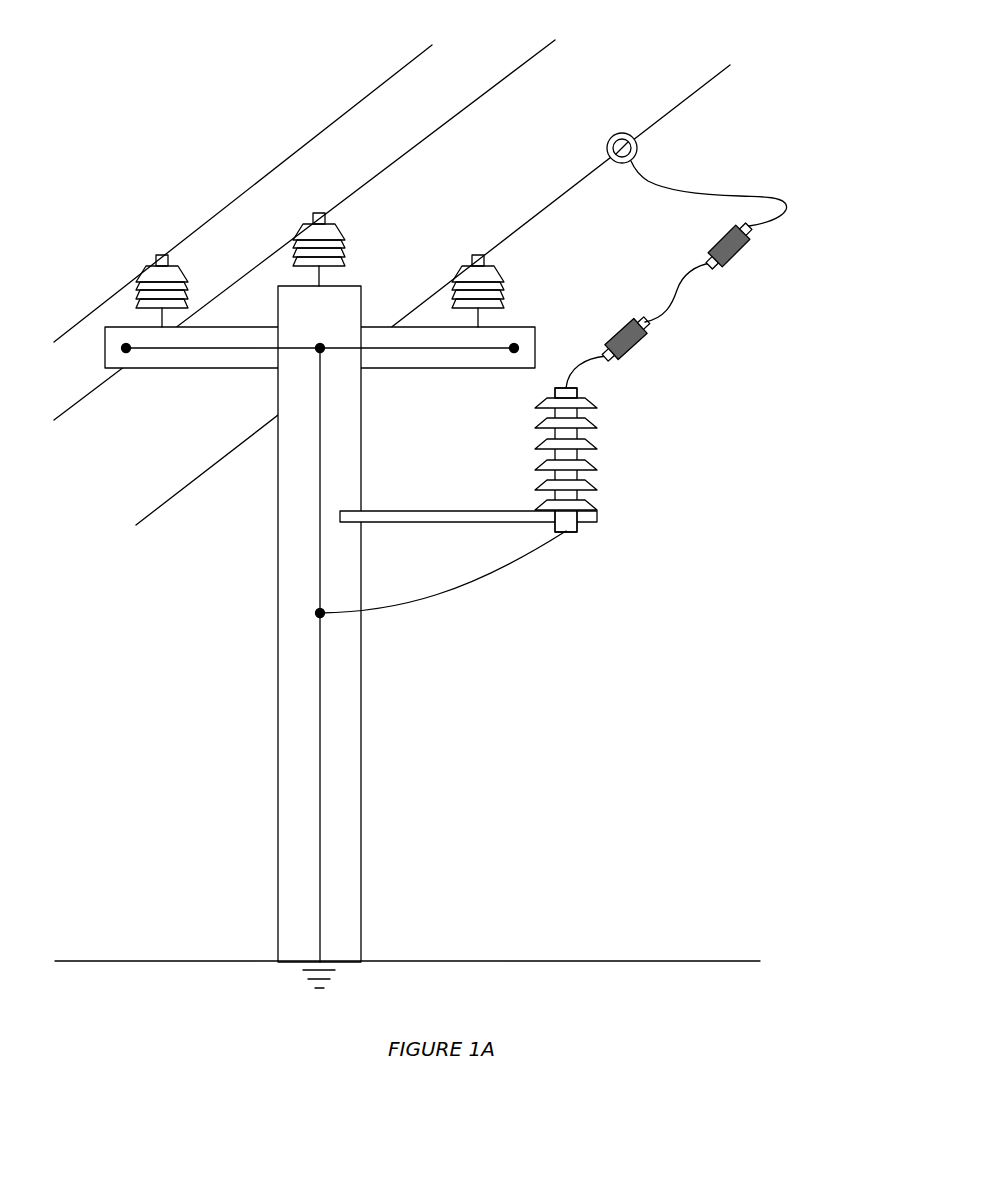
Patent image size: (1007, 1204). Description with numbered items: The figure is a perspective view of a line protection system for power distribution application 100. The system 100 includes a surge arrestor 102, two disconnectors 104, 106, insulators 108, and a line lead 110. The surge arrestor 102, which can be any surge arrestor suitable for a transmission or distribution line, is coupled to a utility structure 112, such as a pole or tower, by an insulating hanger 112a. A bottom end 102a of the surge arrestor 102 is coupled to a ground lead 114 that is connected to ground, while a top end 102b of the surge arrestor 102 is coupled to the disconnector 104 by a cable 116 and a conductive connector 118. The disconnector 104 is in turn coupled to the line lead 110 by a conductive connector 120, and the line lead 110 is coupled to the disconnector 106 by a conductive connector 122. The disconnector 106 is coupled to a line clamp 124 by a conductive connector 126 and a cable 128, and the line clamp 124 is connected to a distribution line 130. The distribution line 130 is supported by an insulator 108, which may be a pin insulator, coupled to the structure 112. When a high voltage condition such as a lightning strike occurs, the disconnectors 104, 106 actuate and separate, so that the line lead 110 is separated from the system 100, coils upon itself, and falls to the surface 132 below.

The line protection system for power distribution application 100 is at (112, 94).
The surge arrestor 102 is at (587, 462).
The bottom end 102a is at (597, 521).
The top end 102b is at (565, 393).
The disconnector 104 is at (647, 311).
The disconnector 106 is at (753, 231).
The insulator 108 is at (167, 277).
The line lead 110 is at (688, 277).
The utility structure 112 is at (350, 706).
The insulating hanger 112a is at (453, 511).
The ground lead 114 is at (484, 583).
The cable 116 is at (575, 362).
The conductive connector 118 is at (603, 348).
The conductive connector 120 is at (646, 315).
The conductive connector 122 is at (705, 260).
The line clamp 124 is at (627, 133).
The conductive connector 126 is at (755, 232).
The cable 128 is at (668, 185).
The distribution line 130 is at (708, 80).
The surface 132 is at (153, 946).